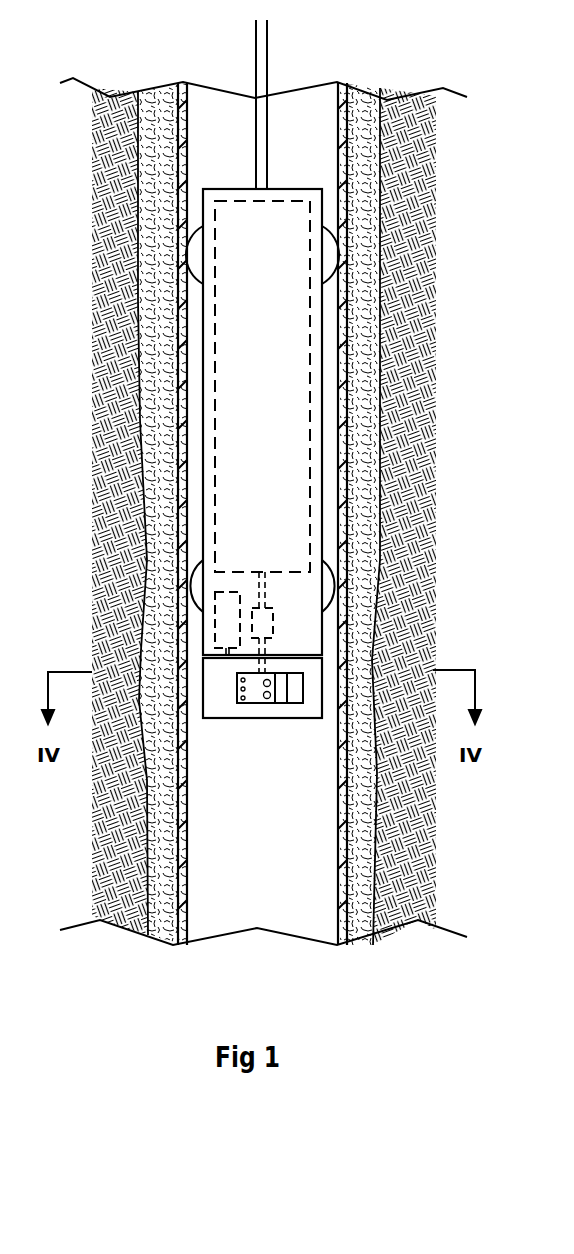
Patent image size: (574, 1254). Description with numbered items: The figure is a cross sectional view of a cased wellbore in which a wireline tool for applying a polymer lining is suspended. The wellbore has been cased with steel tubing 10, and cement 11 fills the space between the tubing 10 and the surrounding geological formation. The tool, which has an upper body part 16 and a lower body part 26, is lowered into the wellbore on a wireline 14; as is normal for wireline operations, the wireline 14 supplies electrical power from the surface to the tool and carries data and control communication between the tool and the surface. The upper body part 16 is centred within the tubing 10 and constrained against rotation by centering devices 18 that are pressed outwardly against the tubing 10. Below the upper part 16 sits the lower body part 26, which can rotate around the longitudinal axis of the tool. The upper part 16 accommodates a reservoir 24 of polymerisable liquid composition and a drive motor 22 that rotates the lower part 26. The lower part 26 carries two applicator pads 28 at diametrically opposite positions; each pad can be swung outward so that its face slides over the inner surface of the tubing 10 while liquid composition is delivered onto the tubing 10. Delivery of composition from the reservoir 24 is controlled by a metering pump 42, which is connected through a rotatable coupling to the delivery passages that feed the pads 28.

The steel tubing 10 is at (343, 122).
The cement 11 is at (363, 163).
The wireline 14 is at (260, 50).
The upper body part 16 is at (322, 310).
The centering devices 18 is at (332, 250).
The drive motor 22 is at (223, 637).
The reservoir 24 is at (272, 358).
The lower body part 26 is at (218, 712).
The applicator pads 28 is at (300, 702).
The metering pump 42 is at (273, 628).